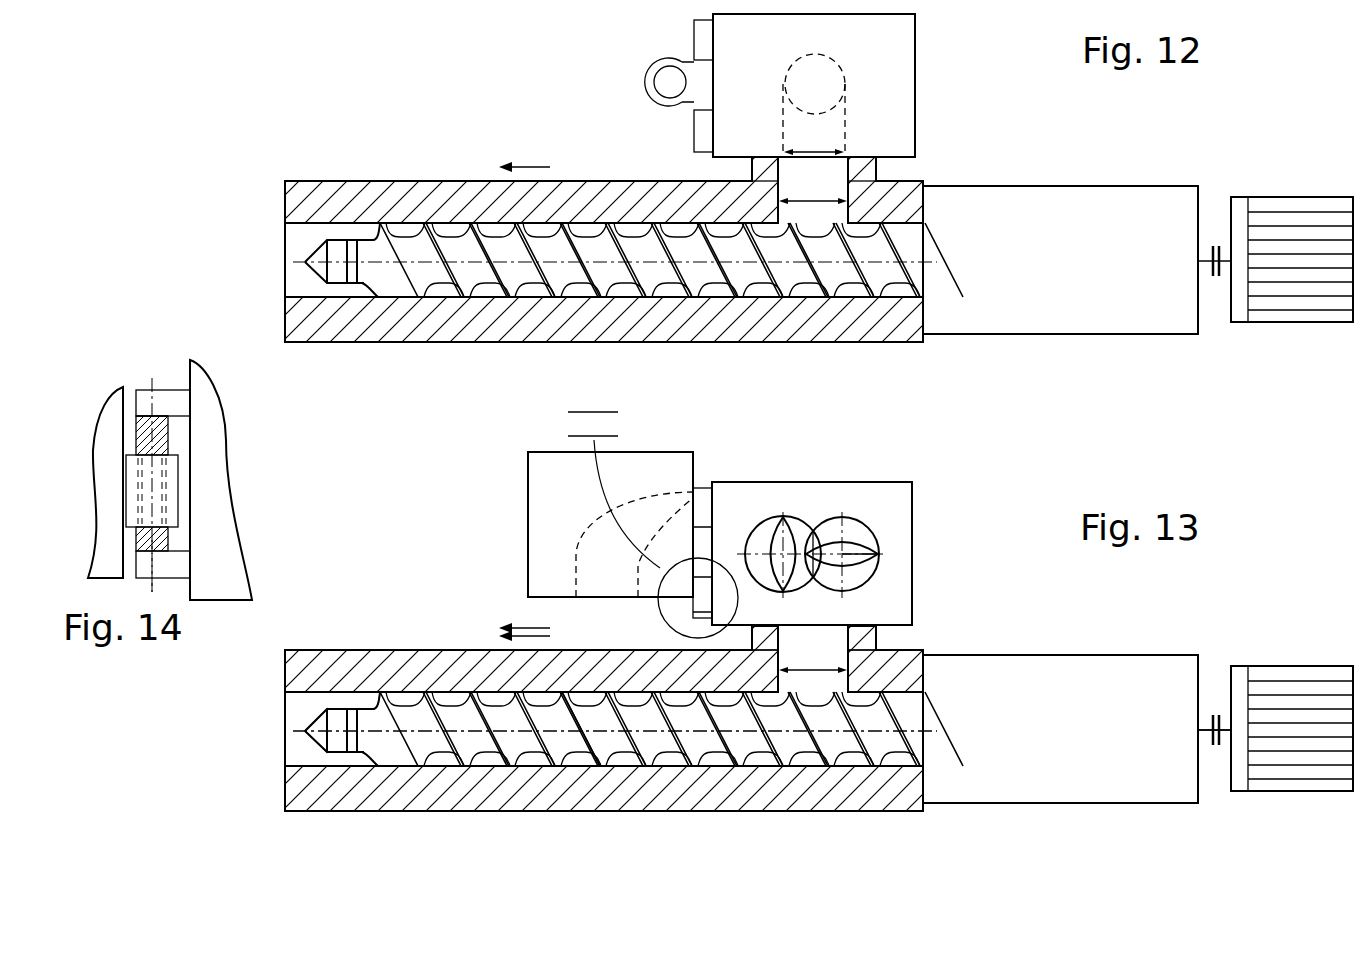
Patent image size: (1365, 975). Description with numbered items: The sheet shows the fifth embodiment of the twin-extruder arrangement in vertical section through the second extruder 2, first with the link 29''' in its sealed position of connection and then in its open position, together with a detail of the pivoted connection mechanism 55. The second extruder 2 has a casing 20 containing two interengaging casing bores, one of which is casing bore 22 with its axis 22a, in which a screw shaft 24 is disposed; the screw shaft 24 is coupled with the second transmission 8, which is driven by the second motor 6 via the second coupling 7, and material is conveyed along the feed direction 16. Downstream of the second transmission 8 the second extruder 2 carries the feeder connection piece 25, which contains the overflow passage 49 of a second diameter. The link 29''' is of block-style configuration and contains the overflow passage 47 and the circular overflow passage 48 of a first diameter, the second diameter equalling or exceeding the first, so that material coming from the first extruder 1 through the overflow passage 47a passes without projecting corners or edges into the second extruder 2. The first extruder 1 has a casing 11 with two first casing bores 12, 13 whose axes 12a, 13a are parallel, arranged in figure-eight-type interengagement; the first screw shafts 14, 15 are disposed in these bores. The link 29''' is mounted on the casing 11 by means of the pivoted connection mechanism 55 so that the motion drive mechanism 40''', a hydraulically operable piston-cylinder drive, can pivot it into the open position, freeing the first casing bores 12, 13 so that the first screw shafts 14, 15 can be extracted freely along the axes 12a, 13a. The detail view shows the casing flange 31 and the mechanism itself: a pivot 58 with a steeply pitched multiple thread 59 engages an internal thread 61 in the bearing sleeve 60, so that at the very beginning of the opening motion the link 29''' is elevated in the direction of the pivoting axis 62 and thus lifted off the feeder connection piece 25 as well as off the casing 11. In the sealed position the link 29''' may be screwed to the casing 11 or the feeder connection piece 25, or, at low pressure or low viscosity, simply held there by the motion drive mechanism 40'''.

In FIG. 13, the first extruder 1 is at (918, 485).
In FIG. 13, the second extruder 2 is at (357, 651).
In FIG. 13, the second motor 6 is at (1287, 672).
In FIG. 13, the second coupling 7 is at (1210, 678).
In FIG. 13, the second transmission 8 is at (1073, 665).
In FIG. 13, the casing 11 is at (900, 580).
In FIG. 13, the first casing bore 12 is at (757, 528).
In FIG. 13, the axis 12a is at (812, 532).
In FIG. 13, the first casing bore 13 is at (862, 524).
In FIG. 13, the axis 13a is at (858, 556).
In FIG. 13, the first screw shaft 14 is at (790, 540).
In FIG. 13, the first screw shaft 15 is at (872, 542).
In FIG. 13, the feed direction 16 is at (518, 628).
In FIG. 13, the casing 20 is at (313, 660).
In FIG. 13, the casing bore 22 is at (405, 697).
In FIG. 13, the axis 22a is at (462, 727).
In FIG. 13, the screw shaft 24 is at (593, 717).
In FIG. 13, the feeder connection piece 25 is at (876, 642).
In FIG. 12, the link 29''' is at (778, 85).
In FIG. 13, the link 29''' is at (581, 524).
In FIG. 14, the link 29''' is at (93, 439).
In FIG. 14, the casing flange 31 is at (210, 460).
In FIG. 12, the motion drive mechanism 40''' is at (608, 76).
In FIG. 13, the overflow passage 47 is at (682, 520).
In FIG. 13, the overflow passage 47a is at (298, 717).
In FIG. 12, the overflow passage 48 is at (838, 127).
In FIG. 13, the overflow passage 48 is at (578, 557).
In FIG. 13, the overflow passage 49 is at (765, 648).
In FIG. 14, the pivoted connection mechanism 55 is at (170, 380).
In FIG. 14, the pivot 58 is at (136, 428).
In FIG. 14, the multiple thread 59 is at (168, 433).
In FIG. 14, the bearing sleeve 60 is at (175, 492).
In FIG. 14, the internal thread 61 is at (165, 500).
In FIG. 14, the pivoting axis 62 is at (152, 563).